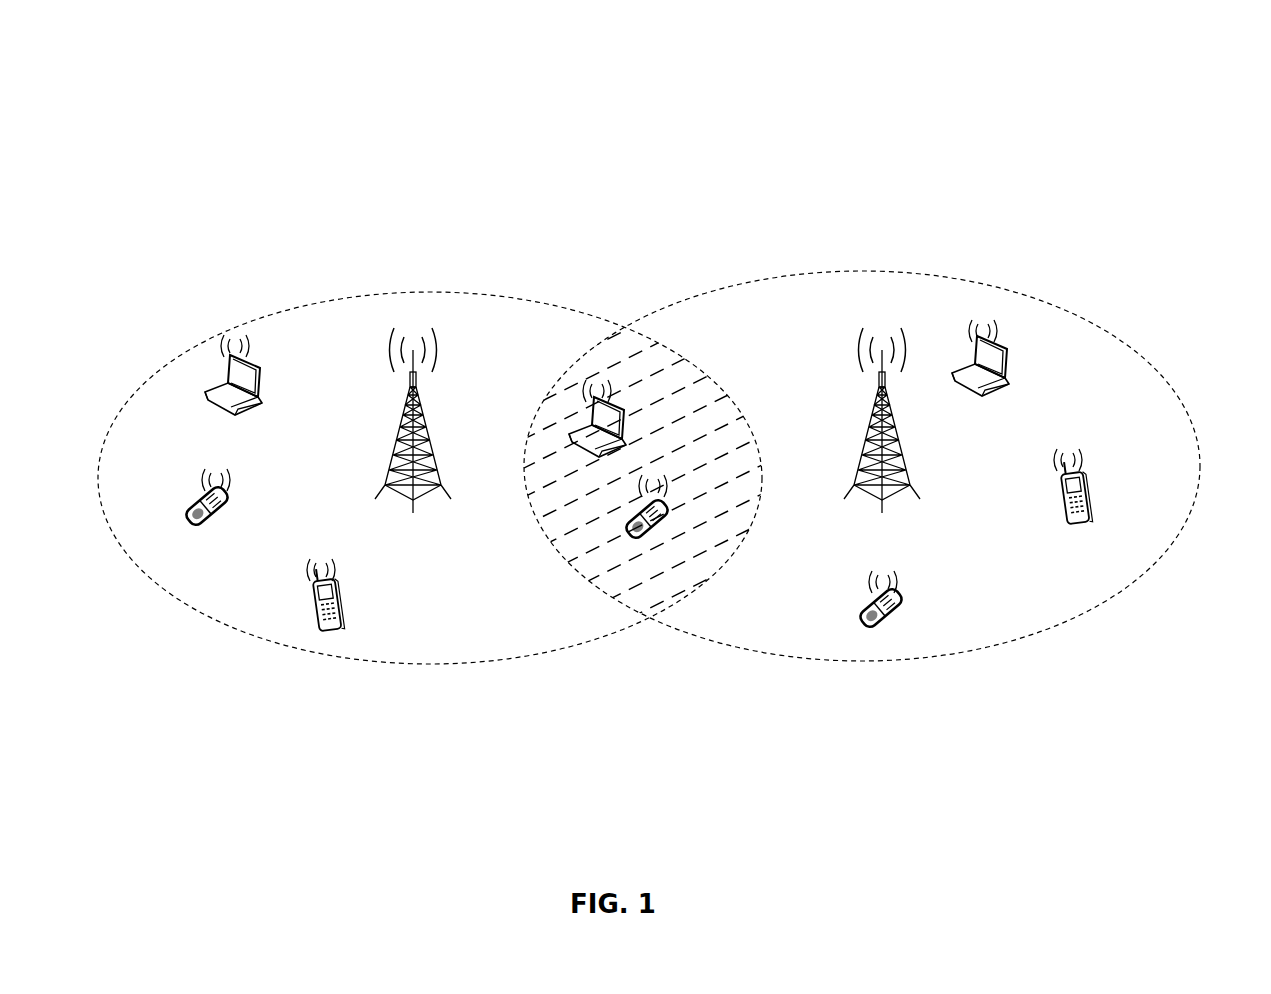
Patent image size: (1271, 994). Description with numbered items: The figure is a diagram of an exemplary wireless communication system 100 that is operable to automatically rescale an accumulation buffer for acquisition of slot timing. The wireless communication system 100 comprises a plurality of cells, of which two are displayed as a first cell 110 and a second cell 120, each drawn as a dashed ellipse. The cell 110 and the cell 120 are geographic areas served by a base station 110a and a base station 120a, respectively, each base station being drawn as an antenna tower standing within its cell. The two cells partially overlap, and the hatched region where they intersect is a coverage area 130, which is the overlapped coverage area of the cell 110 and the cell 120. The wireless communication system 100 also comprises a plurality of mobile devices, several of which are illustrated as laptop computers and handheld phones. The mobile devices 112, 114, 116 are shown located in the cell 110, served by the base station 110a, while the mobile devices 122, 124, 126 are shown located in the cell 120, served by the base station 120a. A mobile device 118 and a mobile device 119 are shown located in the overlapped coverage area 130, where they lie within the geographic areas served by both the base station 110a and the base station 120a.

The wireless communication system 100 is at (348, 95).
The cell 110 is at (530, 298).
The base station 110a is at (445, 350).
The mobile device 112 is at (268, 372).
The mobile device 114 is at (228, 498).
The mobile device 116 is at (345, 609).
The mobile device 118 is at (663, 530).
The mobile device 119 is at (630, 438).
The cell 120 is at (930, 278).
The base station 120a is at (916, 364).
The mobile device 122 is at (1012, 352).
The mobile device 124 is at (1092, 500).
The mobile device 126 is at (900, 606).
The coverage area 130 is at (638, 324).